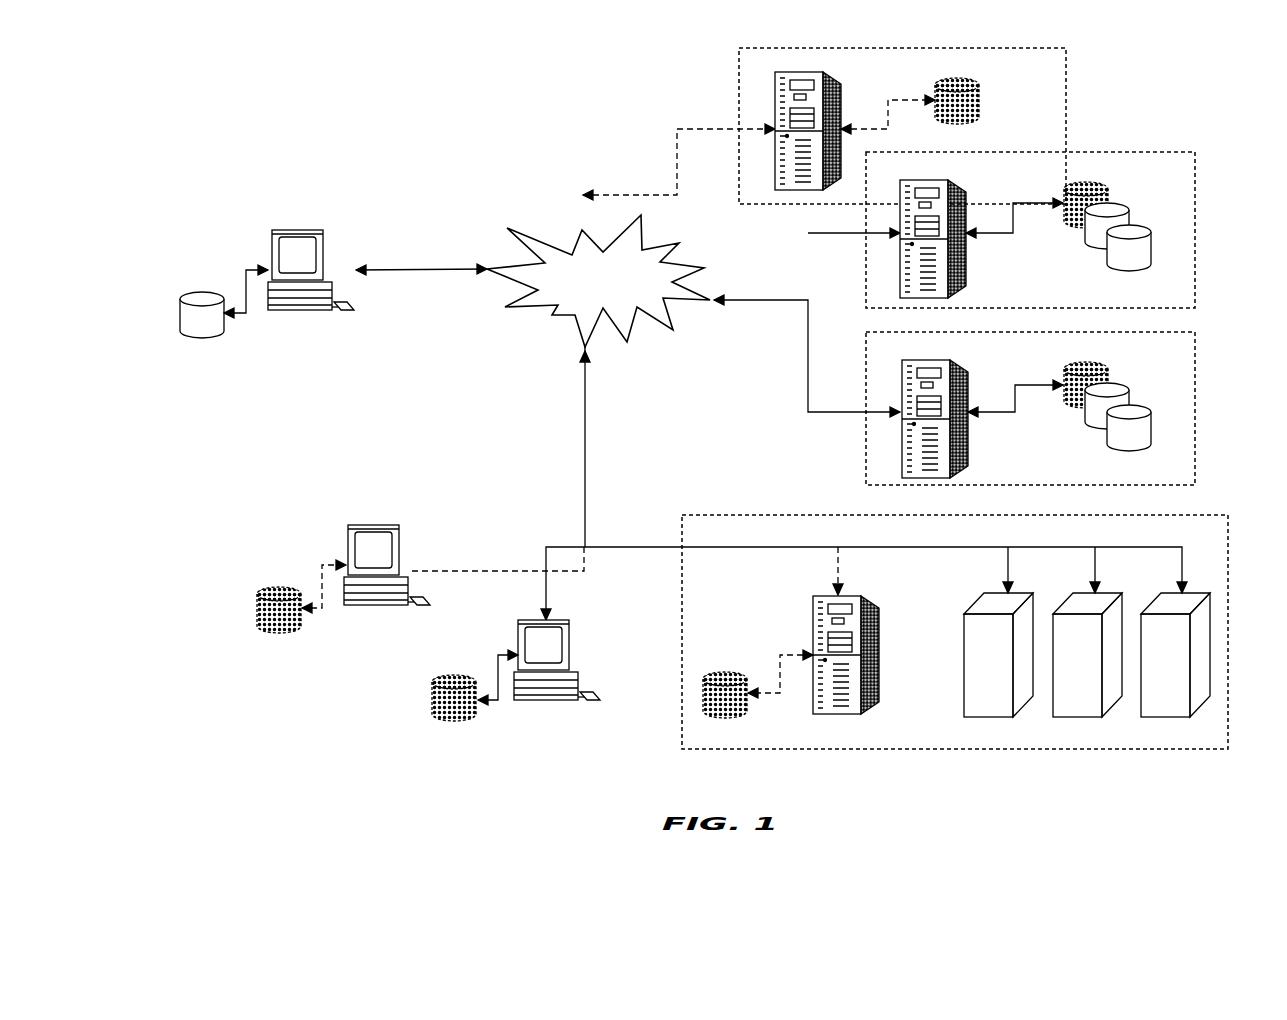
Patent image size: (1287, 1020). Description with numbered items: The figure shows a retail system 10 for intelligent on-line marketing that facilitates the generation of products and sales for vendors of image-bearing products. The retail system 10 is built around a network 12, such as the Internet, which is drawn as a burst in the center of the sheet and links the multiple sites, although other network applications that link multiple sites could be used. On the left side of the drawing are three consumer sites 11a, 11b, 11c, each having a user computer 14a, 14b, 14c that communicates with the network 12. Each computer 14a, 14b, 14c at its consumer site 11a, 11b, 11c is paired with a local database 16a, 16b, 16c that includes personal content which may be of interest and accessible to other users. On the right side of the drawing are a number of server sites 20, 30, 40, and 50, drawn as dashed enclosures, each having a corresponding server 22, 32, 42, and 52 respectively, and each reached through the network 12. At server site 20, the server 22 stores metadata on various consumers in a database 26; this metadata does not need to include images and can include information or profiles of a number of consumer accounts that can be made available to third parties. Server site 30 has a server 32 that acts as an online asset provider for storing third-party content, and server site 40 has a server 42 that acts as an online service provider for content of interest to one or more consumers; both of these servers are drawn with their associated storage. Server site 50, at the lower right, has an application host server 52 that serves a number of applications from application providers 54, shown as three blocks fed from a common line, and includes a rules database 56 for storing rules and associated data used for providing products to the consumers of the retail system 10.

The retail system 10 is at (206, 103).
The consumer site 11a is at (258, 270).
The consumer site 11b is at (301, 545).
The consumer site 11c is at (483, 722).
The network 12 is at (552, 315).
The user computer 14a is at (300, 235).
The user computer 14b is at (363, 525).
The user computer 14c is at (558, 702).
The local database 16a is at (217, 332).
The local database 16b is at (258, 605).
The local database 16c is at (440, 692).
The server site 20 is at (900, 107).
The server 22 is at (772, 108).
The database 26 is at (968, 78).
The server site 30 is at (1032, 230).
The server 32 is at (898, 270).
The server site 40 is at (1021, 408).
The server 42 is at (900, 427).
The server site 50 is at (947, 659).
The application host server 52 is at (812, 618).
The application providers 54 is at (982, 717).
The rules database 56 is at (713, 697).